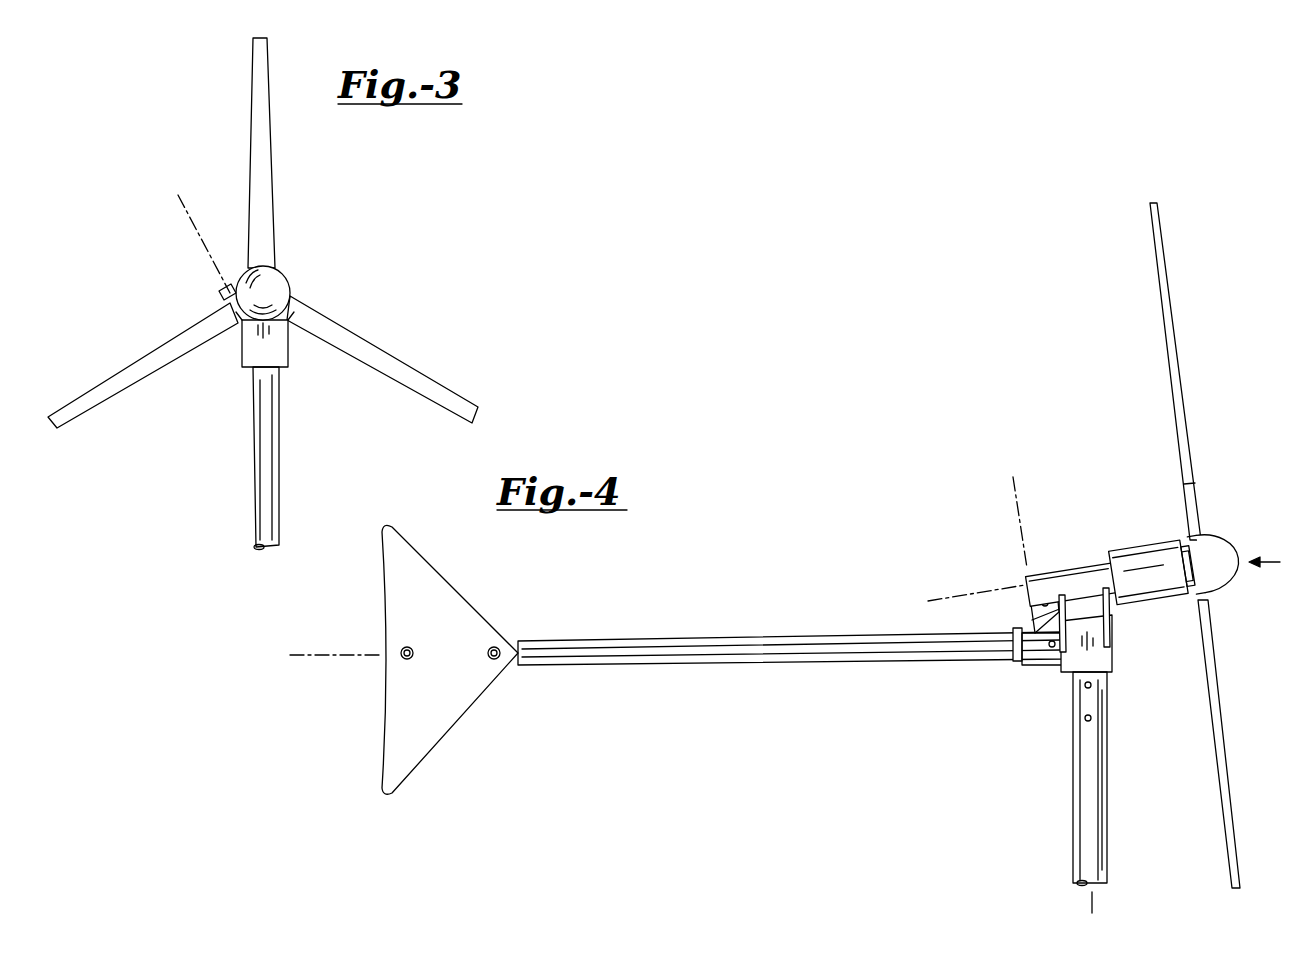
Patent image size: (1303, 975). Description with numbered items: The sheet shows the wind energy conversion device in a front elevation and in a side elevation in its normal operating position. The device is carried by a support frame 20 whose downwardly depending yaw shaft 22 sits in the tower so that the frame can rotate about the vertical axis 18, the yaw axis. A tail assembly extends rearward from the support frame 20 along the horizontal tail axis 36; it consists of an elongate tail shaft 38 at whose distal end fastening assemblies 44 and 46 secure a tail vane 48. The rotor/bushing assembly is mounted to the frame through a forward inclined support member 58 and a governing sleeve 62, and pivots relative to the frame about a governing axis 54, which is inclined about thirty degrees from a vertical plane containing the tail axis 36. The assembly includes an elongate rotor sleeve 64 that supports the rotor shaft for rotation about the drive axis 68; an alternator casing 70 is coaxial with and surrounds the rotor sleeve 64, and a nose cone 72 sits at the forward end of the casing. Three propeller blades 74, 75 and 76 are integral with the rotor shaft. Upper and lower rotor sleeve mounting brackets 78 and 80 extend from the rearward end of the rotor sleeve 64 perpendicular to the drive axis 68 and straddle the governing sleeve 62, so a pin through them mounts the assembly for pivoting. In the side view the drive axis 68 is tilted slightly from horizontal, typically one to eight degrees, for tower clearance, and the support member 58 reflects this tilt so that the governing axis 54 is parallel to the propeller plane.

In FIG. 4, the vertical axis 18 is at (1093, 900).
In FIG. 3, the support frame 20 is at (293, 345).
In FIG. 4, the support frame 20 is at (1115, 670).
In FIG. 3, the yaw shaft 22 is at (280, 453).
In FIG. 4, the yaw shaft 22 is at (1107, 827).
In FIG. 4, the horizontal tail axis 36 is at (310, 653).
In FIG. 4, the tail shaft 38 is at (655, 637).
In FIG. 4, the fastening assembly 44 is at (405, 662).
In FIG. 4, the fastening assembly 46 is at (493, 660).
In FIG. 4, the tail vane 48 is at (448, 588).
In FIG. 3, the governing axis 54 is at (187, 215).
In FIG. 4, the governing axis 54 is at (1016, 494).
In FIG. 3, the forward inclined support member 58 is at (235, 335).
In FIG. 4, the forward inclined support member 58 is at (1112, 608).
In FIG. 4, the governing sleeve 62 is at (1042, 667).
In FIG. 4, the rotor sleeve 64 is at (1048, 572).
In FIG. 4, the drive axis 68 is at (952, 598).
In FIG. 4, the alternator casing 70 is at (1122, 548).
In FIG. 3, the nose cone 72 is at (292, 277).
In FIG. 4, the nose cone 72 is at (1220, 537).
In FIG. 3, the propeller blade 74 is at (275, 202).
In FIG. 4, the propeller blade 74 is at (1183, 408).
In FIG. 3, the propeller blade 75 is at (373, 342).
In FIG. 3, the propeller blade 76 is at (155, 350).
In FIG. 4, the propeller blade 76 is at (1222, 717).
In FIG. 4, the upper rotor sleeve mounting bracket 78 is at (1033, 612).
In FIG. 4, the lower rotor sleeve mounting bracket 80 is at (1033, 630).